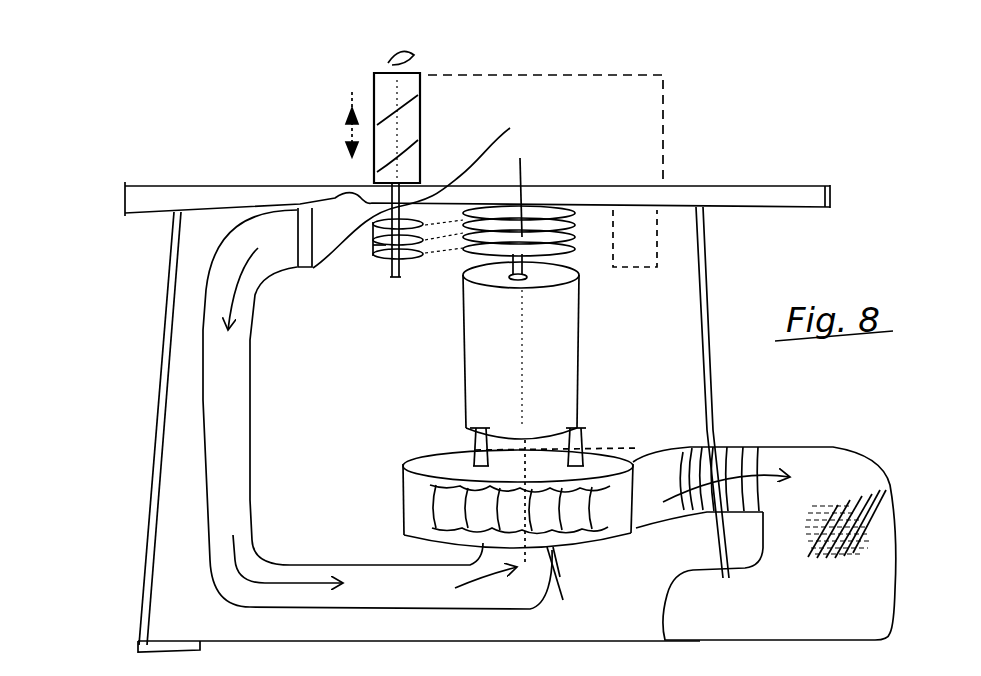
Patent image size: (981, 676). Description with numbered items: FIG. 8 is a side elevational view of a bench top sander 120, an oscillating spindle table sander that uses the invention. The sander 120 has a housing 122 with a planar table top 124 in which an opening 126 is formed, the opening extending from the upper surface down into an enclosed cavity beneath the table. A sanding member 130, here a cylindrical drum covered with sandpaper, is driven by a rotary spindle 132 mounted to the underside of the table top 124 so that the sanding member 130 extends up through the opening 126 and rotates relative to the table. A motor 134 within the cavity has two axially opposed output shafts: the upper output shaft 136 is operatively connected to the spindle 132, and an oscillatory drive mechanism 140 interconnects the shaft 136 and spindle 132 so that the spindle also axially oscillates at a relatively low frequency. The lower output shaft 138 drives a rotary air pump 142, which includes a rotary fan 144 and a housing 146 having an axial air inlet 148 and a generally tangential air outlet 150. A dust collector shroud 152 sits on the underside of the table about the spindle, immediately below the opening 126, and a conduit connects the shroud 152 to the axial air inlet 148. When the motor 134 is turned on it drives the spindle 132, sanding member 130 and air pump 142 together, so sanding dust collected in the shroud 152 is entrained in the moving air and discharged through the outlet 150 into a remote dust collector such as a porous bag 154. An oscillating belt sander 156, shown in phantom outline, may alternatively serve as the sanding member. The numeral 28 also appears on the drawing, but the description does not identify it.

The sander 120 is at (735, 130).
The housing 122 is at (707, 297).
The table top 124 is at (815, 186).
The opening 126 is at (355, 186).
The sanding member 130 is at (416, 82).
The rotary spindle 132 is at (391, 259).
The motor 134 is at (563, 357).
The output shaft 136 is at (580, 272).
The lower output shaft 138 is at (580, 440).
The oscillatory drive mechanism 140 is at (468, 250).
The rotary air pump 142 is at (395, 487).
The rotary fan 144 is at (582, 530).
The housing 146 is at (577, 460).
The axial air inlet 148 is at (572, 587).
The tangential air outlet 150 is at (655, 518).
The dust collector shroud 152 is at (325, 260).
The porous bag 154 is at (830, 463).
The oscillating belt sander 156 is at (548, 75).
The enclosure wall 28 is at (178, 525).